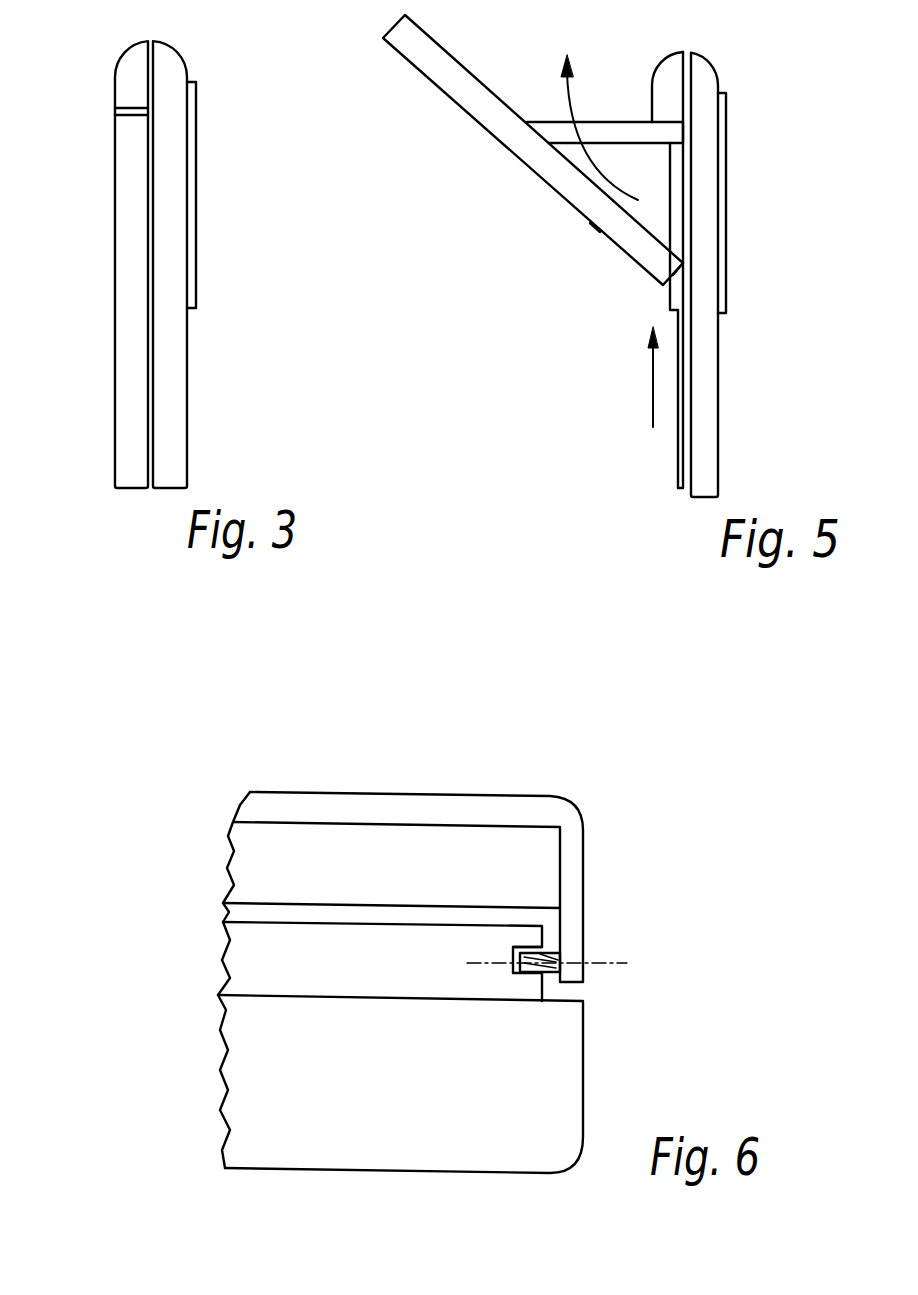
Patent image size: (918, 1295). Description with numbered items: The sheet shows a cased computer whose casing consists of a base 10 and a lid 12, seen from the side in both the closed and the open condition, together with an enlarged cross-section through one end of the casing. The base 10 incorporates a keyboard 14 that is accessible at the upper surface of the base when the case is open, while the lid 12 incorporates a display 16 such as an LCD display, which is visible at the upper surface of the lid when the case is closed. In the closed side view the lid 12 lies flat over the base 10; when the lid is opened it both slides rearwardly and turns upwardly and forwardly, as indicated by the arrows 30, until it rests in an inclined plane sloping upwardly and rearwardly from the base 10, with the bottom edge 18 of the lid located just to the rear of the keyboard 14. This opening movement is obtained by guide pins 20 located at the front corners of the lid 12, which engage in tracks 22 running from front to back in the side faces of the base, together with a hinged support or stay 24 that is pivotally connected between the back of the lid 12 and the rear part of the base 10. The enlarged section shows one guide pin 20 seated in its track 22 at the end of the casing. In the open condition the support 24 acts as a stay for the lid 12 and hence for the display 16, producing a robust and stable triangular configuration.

In FIG. 3, the base 10 is at (173, 197).
In FIG. 5, the base 10 is at (710, 410).
In FIG. 6, the base 10 is at (493, 987).
In FIG. 3, the lid 12 is at (130, 290).
In FIG. 5, the lid 12 is at (535, 157).
In FIG. 5, the keyboard 14 is at (679, 428).
In FIG. 5, the display 16 is at (591, 222).
In FIG. 6, the display 16 is at (575, 848).
In FIG. 5, the bottom edge 18 is at (680, 278).
In FIG. 6, the guide pins 20 is at (550, 952).
In FIG. 6, the tracks 22 is at (522, 947).
In FIG. 5, the hinged support 24 is at (643, 137).
In FIG. 5, the arrows 30 is at (575, 103).